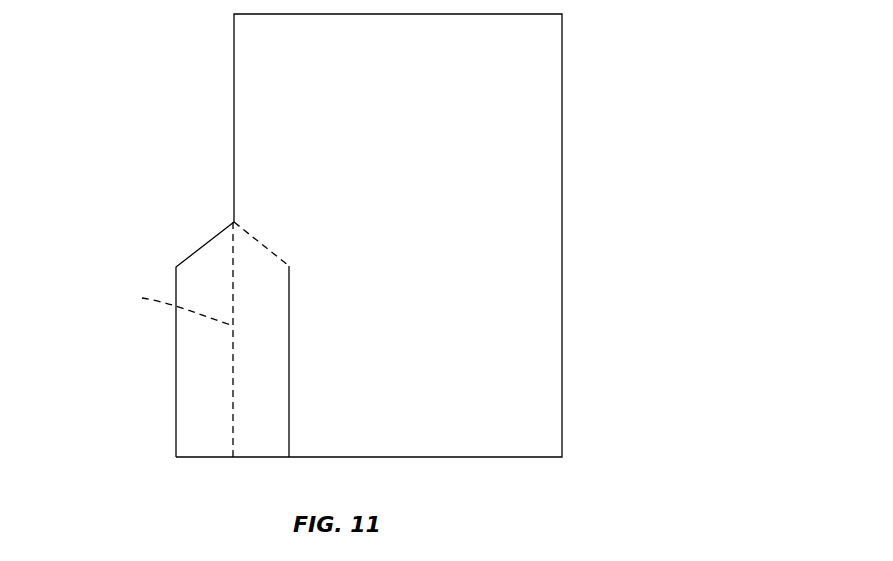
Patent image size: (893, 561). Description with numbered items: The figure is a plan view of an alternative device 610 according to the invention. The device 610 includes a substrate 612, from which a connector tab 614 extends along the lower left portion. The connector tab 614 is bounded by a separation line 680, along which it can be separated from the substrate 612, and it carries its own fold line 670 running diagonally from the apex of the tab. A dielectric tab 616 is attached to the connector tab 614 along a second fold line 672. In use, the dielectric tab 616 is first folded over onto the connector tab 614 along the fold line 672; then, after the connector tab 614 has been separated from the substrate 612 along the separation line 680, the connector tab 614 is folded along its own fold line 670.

The device 610 is at (400, 239).
The substrate 612 is at (563, 318).
The connector tab 614 is at (260, 415).
The dielectric tab 616 is at (188, 408).
The fold line 670 is at (263, 243).
The fold line 672 is at (128, 298).
The separation line 680 is at (290, 340).